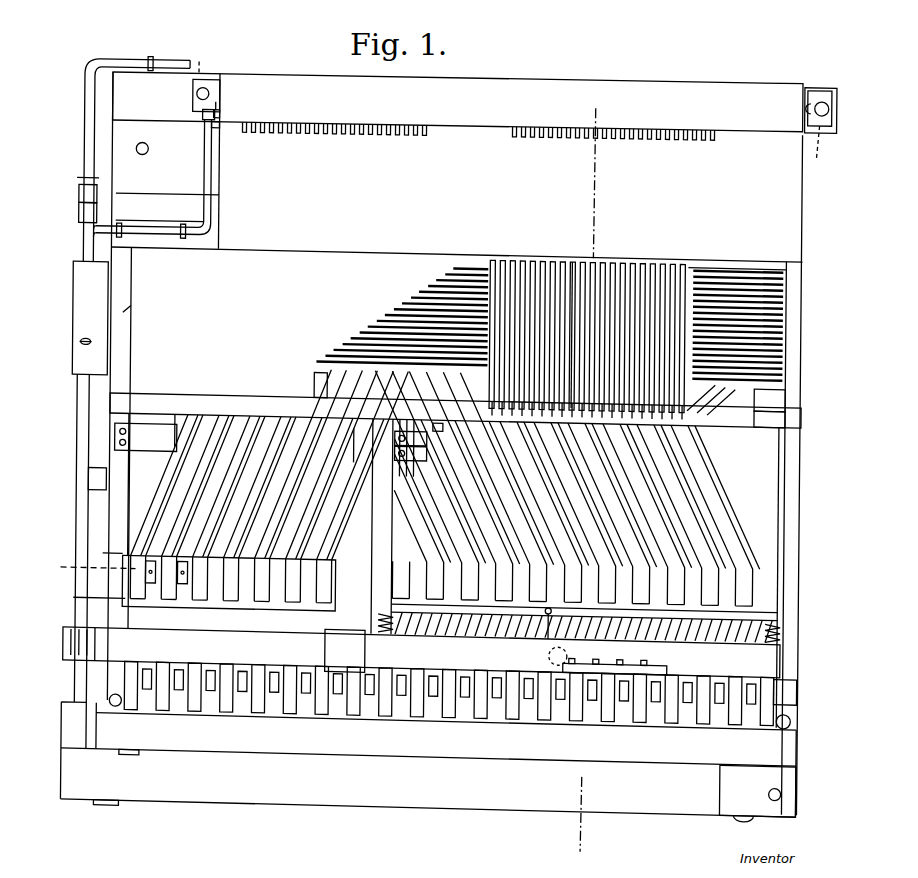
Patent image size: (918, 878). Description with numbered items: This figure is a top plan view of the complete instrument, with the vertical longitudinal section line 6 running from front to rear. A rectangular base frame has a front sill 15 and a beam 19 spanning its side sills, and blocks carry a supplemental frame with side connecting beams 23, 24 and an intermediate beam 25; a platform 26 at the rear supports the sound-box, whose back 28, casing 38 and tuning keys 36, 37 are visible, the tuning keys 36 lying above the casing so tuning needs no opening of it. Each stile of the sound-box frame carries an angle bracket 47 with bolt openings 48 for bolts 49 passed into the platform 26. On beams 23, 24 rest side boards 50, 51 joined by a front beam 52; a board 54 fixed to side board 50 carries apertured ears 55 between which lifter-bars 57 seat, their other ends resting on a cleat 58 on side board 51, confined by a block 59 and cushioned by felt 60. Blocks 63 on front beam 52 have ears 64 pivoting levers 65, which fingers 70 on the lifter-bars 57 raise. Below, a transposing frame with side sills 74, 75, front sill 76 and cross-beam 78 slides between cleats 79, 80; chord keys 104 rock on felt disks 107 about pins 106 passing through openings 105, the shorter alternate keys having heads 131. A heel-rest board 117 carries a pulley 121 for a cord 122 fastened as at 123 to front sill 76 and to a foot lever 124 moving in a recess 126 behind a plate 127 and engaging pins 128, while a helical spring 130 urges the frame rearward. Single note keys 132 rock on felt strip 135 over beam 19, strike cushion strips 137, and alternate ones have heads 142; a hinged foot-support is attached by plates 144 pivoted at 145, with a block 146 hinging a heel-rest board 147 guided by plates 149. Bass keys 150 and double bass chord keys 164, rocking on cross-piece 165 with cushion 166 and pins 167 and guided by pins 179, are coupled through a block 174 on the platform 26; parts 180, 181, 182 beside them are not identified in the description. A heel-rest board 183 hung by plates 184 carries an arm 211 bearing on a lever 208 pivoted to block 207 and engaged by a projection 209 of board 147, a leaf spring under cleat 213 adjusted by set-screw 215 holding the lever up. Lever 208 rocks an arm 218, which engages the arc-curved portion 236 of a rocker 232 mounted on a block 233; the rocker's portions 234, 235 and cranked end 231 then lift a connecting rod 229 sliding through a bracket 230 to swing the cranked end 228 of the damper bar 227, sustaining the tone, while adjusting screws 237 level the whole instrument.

In FIG. 1, the section line 6 is at (592, 465).
The front sill 15 is at (449, 712).
In FIG. 1, the beam 19 is at (160, 466).
In FIG. 1, the side connecting beam 23 is at (135, 364).
In FIG. 1, the side connecting beam 24 is at (790, 483).
In FIG. 1, the intermediate beam 25 is at (320, 393).
In FIG. 1, the platform 26 is at (168, 154).
In FIG. 1, the back 28 is at (598, 72).
In FIG. 1, the tuning keys 36 is at (318, 132).
In FIG. 1, the tuning keys 37 is at (607, 132).
In FIG. 1, the casing 38 is at (457, 217).
In FIG. 1, the angle bracket 47 is at (222, 86).
In FIG. 1, the bolt openings 48 is at (194, 84).
In FIG. 1, the bolts 49 is at (205, 87).
In FIG. 1, the side board 50 is at (134, 320).
In FIG. 1, the side board 51 is at (792, 358).
In FIG. 1, the front beam 52 is at (456, 391).
In FIG. 1, the board 54 is at (251, 306).
In FIG. 1, the apertured ears 55 is at (345, 366).
In FIG. 1, the lifter-bars 57 is at (446, 286).
In FIG. 1, the cleat 58 is at (790, 396).
In FIG. 1, the block 59 is at (790, 382).
In FIG. 1, the strip of felt 60 is at (788, 254).
In FIG. 1, the blocks 63 is at (492, 405).
In FIG. 1, the apertured ears 64 is at (708, 390).
In FIG. 1, the levers 65 is at (578, 252).
In FIG. 1, the finger 70 is at (628, 252).
In FIG. 1, the side sill 74 is at (398, 434).
In FIG. 1, the side sill 75 is at (601, 489).
In FIG. 1, the front sill 76 is at (583, 637).
In FIG. 1, the intermediate cross connecting beam 78 is at (348, 427).
In FIG. 1, the cleat 79 is at (770, 540).
In FIG. 1, the cleat 80 is at (383, 532).
In FIG. 1, the chord keys 104 is at (550, 606).
In FIG. 1, the opening 105 is at (427, 412).
In FIG. 1, the pins 106 is at (417, 436).
In FIG. 1, the disk of felt 107 is at (440, 446).
In FIG. 1, the heel-rest board 117 is at (421, 651).
The pulley 121 is at (576, 665).
In FIG. 1, the cord 122 is at (617, 653).
In FIG. 1, the connection of cord 123 is at (630, 650).
The foot operated lever 124 is at (449, 709).
In FIG. 1, the recess 126 is at (617, 653).
In FIG. 1, the plate 127 is at (555, 651).
The pins 128 is at (449, 710).
In FIG. 1, the helical spring 130 is at (788, 617).
In FIG. 1, the upstanding head 131 is at (720, 574).
The single note keys 132 is at (449, 712).
In FIG. 1, the strip of felt 135 is at (178, 454).
The cushion-strip 137 is at (449, 710).
The heads 142 is at (449, 709).
The plates 144 is at (114, 729).
The pivotal connection 145 is at (115, 699).
The block 146 is at (757, 791).
The heel-rest board 147 is at (428, 764).
The guide-plates 149 is at (122, 800).
The bass keys 150 is at (449, 712).
In FIG. 1, the double bass chord keys 164 is at (215, 597).
In FIG. 1, the cross-piece 165 is at (455, 410).
In FIG. 1, the cushion 166 is at (182, 440).
In FIG. 1, the pins 167 is at (218, 375).
In FIG. 1, the block 174 is at (224, 201).
In FIG. 1, the pins 179 is at (87, 569).
In FIG. 1, the bar 180 is at (83, 599).
In FIG. 1, the tab 181 is at (187, 584).
In FIG. 1, the tab 182 is at (155, 584).
In FIG. 1, the heel-rest board 183 is at (421, 651).
The plates 184 is at (449, 712).
In FIG. 1, the block 207 is at (92, 472).
In FIG. 1, the lever 208 is at (65, 538).
The projection 209 is at (80, 736).
In FIG. 1, the arm 211 is at (69, 639).
In FIG. 1, the cleat 213 is at (92, 318).
In FIG. 1, the set-screw 215 is at (90, 340).
In FIG. 1, the arm 218 is at (85, 134).
In FIG. 1, the damper bar 227 is at (218, 128).
In FIG. 1, the cranked end 228 is at (203, 119).
In FIG. 1, the connecting rod 229 is at (217, 104).
In FIG. 1, the bracket 230 is at (220, 112).
In FIG. 1, the cranked end 231 is at (205, 161).
In FIG. 1, the rocker 232 is at (168, 224).
In FIG. 1, the block 233 is at (144, 224).
In FIG. 1, the rearwardly directed portion 234 is at (69, 216).
In FIG. 1, the downwardly and rearwardly directed portion 235 is at (70, 195).
In FIG. 1, the curved portion 236 is at (86, 176).
In FIG. 1, the adjusting screws 237 is at (143, 142).